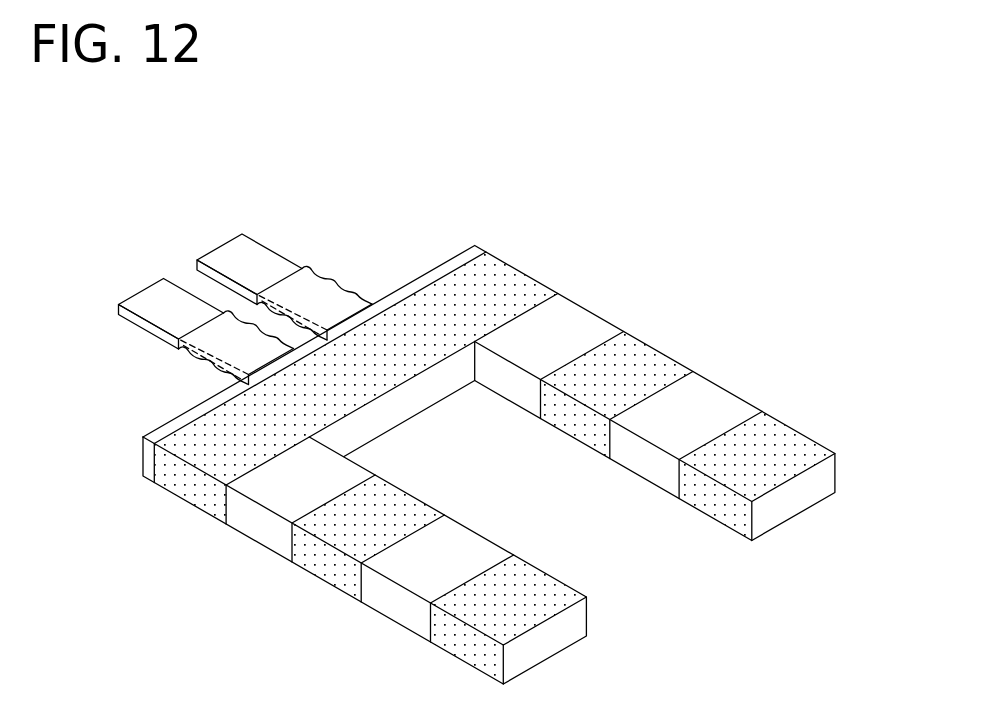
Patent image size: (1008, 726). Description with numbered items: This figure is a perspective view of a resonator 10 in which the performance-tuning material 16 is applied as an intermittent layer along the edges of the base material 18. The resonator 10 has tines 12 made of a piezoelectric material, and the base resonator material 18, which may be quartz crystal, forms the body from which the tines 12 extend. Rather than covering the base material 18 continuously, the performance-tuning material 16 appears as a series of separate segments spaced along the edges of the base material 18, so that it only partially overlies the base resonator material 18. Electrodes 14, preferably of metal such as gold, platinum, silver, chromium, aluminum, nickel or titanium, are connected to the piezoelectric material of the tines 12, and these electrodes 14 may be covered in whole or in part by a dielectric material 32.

The resonator 10 is at (473, 414).
The tine 12 is at (718, 384).
The electrode 14 is at (147, 305).
The performance-tuning material 16 is at (498, 280).
The base material 18 is at (403, 602).
The dielectric material 32 is at (187, 333).